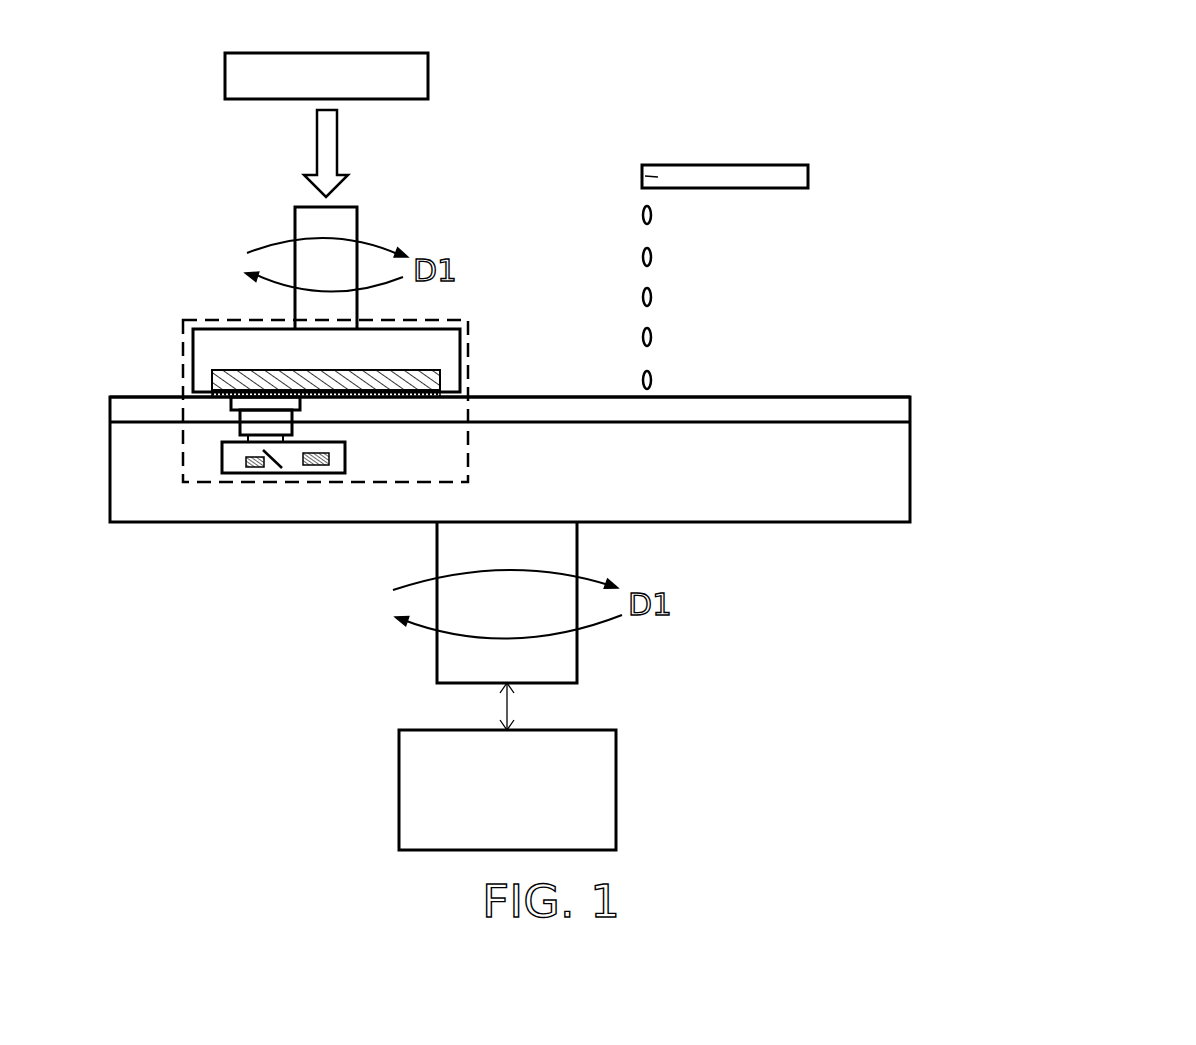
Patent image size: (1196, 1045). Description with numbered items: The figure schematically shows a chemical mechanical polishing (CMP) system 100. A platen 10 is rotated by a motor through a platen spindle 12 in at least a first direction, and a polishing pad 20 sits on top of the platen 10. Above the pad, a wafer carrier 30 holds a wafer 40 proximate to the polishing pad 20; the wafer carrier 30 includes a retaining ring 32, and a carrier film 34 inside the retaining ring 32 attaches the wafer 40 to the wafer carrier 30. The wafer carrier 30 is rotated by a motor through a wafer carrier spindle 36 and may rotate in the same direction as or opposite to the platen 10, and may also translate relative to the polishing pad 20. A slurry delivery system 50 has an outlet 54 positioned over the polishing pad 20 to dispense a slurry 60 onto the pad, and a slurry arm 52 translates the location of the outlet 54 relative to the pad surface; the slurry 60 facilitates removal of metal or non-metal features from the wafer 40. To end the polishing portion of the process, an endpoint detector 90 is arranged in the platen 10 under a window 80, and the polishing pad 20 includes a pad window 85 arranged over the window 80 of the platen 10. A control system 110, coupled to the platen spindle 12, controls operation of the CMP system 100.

The CMP system 100 is at (1090, 123).
The platen 10 is at (844, 527).
The platen spindle 12 is at (568, 662).
The polishing pad 20 is at (845, 392).
The wafer carrier 30 is at (218, 349).
The retaining ring 32 is at (470, 367).
The carrier film 34 is at (233, 380).
The wafer carrier spindle 36 is at (305, 225).
The wafer 40 is at (200, 398).
The slurry delivery system 50 is at (726, 122).
The slurry arm 52 is at (800, 176).
The outlet 54 is at (655, 177).
The slurry 60 is at (670, 288).
The window 80 is at (257, 427).
The pad window 85 is at (252, 406).
The endpoint detector 90 is at (294, 484).
The control system 110 is at (534, 807).